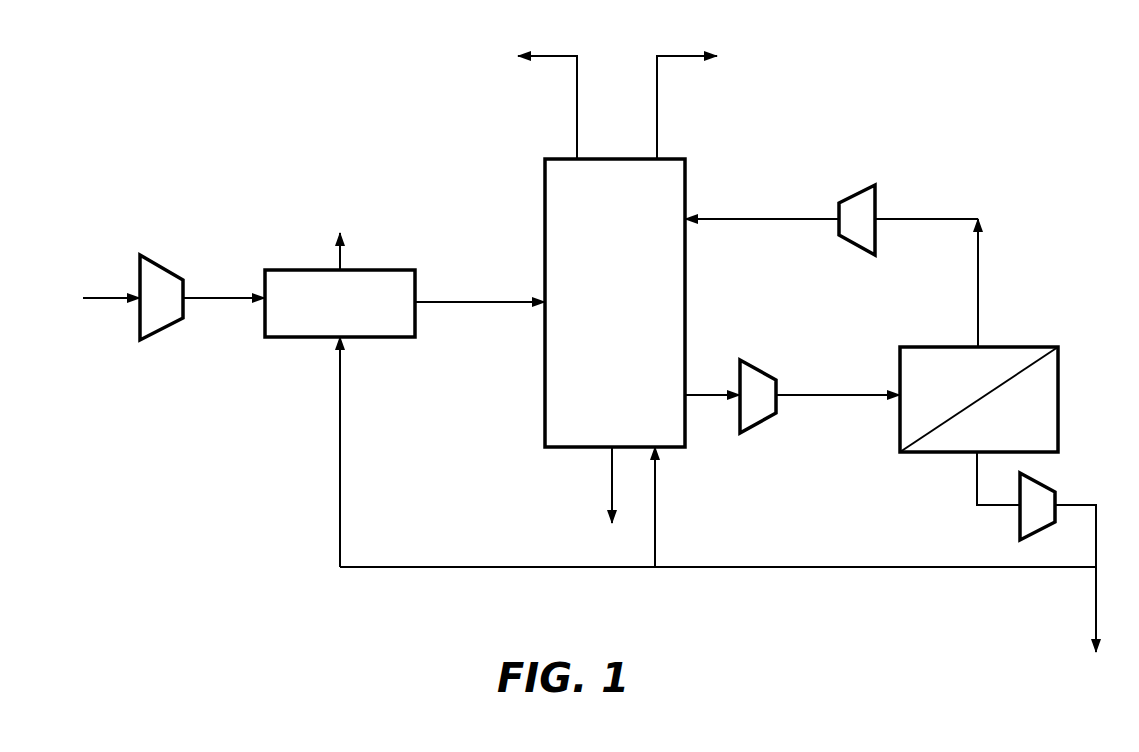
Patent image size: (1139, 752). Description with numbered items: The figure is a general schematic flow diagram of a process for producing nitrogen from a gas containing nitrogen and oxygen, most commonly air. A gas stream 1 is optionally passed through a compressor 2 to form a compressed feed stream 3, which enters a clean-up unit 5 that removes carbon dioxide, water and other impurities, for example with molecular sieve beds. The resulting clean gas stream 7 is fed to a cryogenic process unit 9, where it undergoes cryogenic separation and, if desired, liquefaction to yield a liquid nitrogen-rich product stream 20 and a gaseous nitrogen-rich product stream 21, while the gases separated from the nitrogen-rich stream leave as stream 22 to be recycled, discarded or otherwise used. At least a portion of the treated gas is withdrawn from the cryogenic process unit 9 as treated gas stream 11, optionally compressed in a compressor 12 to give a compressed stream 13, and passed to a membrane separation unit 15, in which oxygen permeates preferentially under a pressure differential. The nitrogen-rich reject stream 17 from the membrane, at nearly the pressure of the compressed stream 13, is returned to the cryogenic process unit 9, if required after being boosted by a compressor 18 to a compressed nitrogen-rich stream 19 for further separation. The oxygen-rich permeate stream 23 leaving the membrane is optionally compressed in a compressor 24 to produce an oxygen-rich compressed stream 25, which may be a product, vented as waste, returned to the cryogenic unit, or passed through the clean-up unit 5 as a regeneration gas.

The gas stream 1 is at (112, 286).
The compressor 2 is at (166, 310).
The compressed feed stream 3 is at (232, 296).
The clean-up unit 5 is at (349, 311).
The clean gas stream 7 is at (490, 298).
The cryogenic process unit 9 is at (624, 279).
The treated gas stream 11 is at (716, 386).
The compressor 12 is at (769, 402).
The compressed stream 13 is at (845, 389).
The membrane separation unit 15 is at (984, 389).
The nitrogen-rich reject stream 17 is at (980, 295).
The compressor 18 is at (867, 231).
The compressed nitrogen-rich stream 19 is at (764, 218).
The liquid nitrogen-rich product stream 20 is at (660, 127).
The gaseous nitrogen-rich product stream 21 is at (579, 127).
The separated gases stream 22 is at (610, 464).
The oxygen-rich permeate stream 23 is at (972, 484).
The compressor 24 is at (1037, 506).
The oxygen-rich compressed stream 25 is at (482, 566).